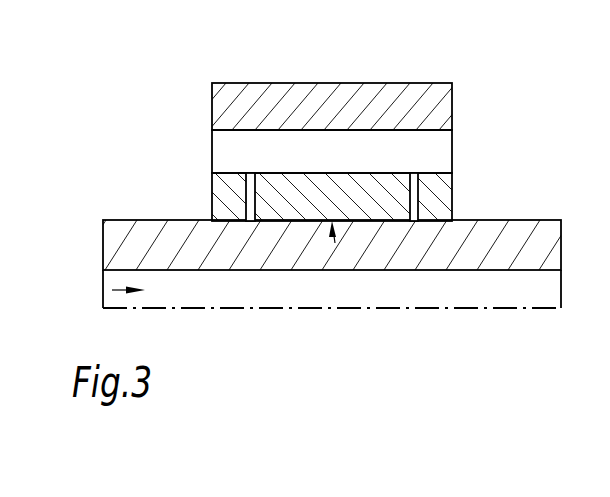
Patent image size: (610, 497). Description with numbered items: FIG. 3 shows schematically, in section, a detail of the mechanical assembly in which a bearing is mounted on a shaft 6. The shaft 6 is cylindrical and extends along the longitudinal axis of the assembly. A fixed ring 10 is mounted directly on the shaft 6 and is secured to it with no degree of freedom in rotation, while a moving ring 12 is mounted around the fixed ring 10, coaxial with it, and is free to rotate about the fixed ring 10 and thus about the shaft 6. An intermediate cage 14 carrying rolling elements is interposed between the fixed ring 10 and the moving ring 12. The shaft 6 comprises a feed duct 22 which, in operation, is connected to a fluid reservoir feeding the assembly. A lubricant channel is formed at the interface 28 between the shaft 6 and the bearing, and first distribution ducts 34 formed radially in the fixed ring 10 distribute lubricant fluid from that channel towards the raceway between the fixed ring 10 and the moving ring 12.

The shaft 6 is at (138, 240).
The fixed ring 10 is at (214, 188).
The moving ring 12 is at (376, 105).
The intermediate cage 14 is at (448, 152).
The feed duct 22 is at (102, 290).
The interface 28 is at (335, 243).
The first distribution ducts 34 is at (248, 170).